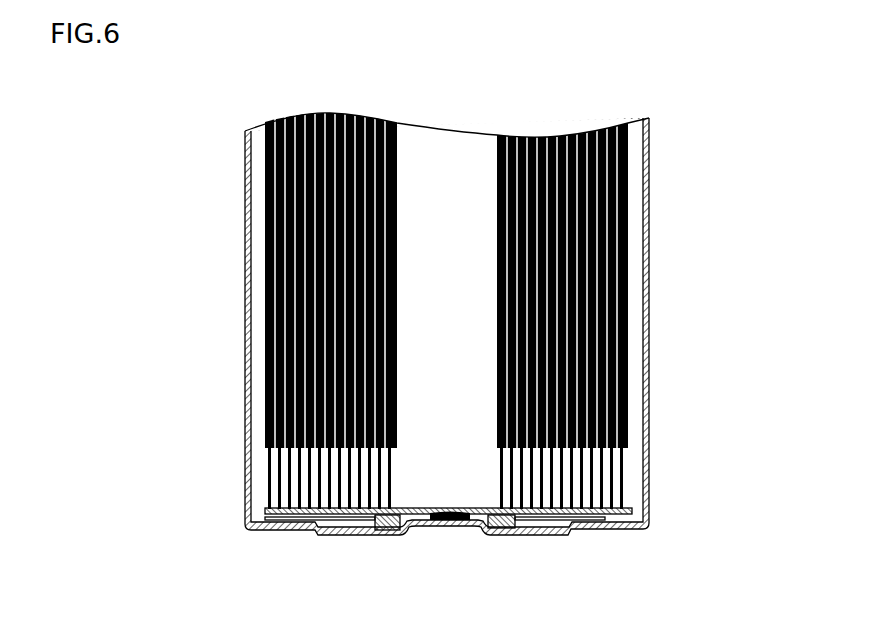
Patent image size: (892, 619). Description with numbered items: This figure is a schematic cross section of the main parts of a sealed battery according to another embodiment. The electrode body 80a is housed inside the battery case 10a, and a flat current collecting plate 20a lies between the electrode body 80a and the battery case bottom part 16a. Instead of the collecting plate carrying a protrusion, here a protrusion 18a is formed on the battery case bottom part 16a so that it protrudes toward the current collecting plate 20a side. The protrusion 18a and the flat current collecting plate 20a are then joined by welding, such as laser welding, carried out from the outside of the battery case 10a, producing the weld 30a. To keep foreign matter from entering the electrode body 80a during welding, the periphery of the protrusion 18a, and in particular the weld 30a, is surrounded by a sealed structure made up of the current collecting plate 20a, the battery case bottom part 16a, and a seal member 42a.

The battery case 10a is at (650, 303).
The electrode body 80a is at (628, 220).
The current collecting plate 20a is at (603, 512).
The protrusion 18a is at (473, 527).
The seal member 42a is at (379, 535).
The battery case bottom part 16a is at (547, 535).
The weld 30a is at (442, 521).